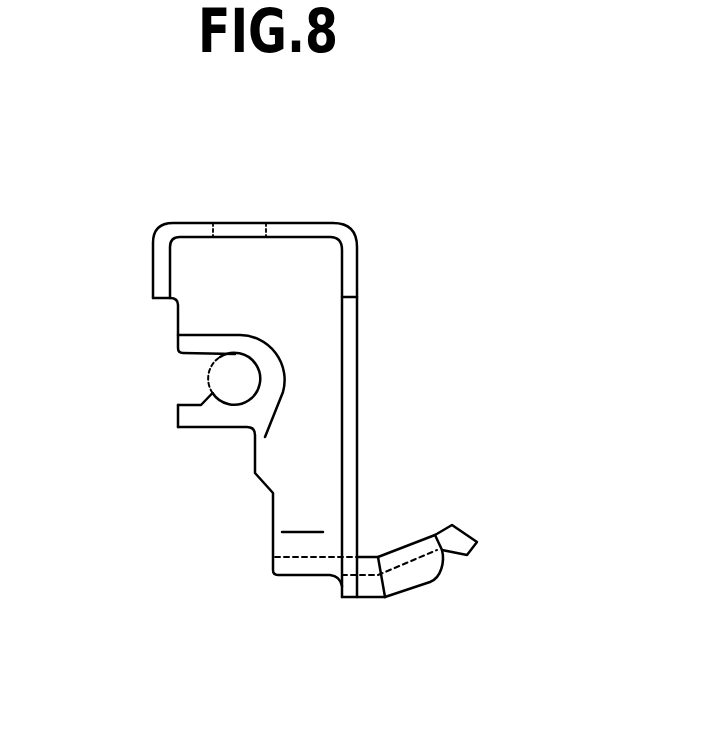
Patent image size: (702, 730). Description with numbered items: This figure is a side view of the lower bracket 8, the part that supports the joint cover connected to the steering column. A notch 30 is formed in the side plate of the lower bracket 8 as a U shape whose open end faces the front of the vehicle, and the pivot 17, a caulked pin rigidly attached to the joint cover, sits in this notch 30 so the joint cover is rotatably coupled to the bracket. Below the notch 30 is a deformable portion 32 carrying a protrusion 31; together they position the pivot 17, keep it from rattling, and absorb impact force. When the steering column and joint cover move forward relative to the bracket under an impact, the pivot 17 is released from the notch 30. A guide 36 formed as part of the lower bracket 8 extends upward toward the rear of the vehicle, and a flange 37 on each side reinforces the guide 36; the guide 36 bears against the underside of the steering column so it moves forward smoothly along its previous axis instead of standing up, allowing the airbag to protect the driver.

The lower bracket 8 is at (331, 198).
The pivot 17 is at (243, 373).
The notch 30 is at (190, 358).
The protrusion 31 is at (210, 396).
The deformable portion 32 is at (210, 418).
The guide 36 is at (450, 537).
The flange 37 is at (407, 575).